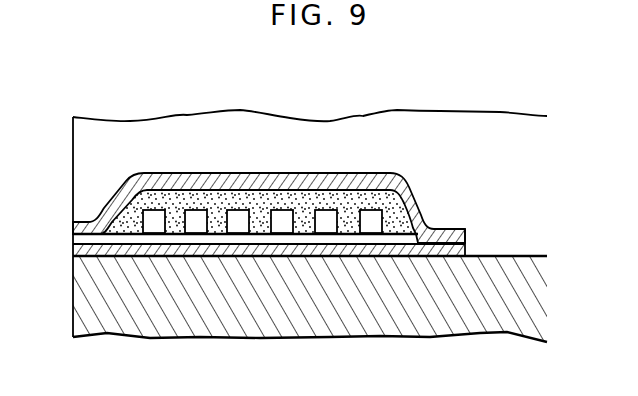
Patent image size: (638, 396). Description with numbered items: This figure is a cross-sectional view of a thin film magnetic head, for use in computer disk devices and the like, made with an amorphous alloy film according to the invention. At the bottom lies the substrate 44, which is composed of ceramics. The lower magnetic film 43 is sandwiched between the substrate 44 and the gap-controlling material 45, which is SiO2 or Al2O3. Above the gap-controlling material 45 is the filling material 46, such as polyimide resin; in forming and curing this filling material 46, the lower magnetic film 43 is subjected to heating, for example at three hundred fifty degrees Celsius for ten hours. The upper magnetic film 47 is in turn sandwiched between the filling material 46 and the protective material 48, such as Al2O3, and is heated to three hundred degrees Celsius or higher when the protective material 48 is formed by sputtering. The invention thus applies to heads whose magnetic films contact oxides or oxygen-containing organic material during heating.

The lower magnetic film 43 is at (90, 257).
The substrate 44 is at (97, 313).
The gap-controlling material 45 is at (85, 243).
The filling material 46 is at (392, 190).
The upper magnetic film 47 is at (260, 173).
The protective material 48 is at (156, 134).